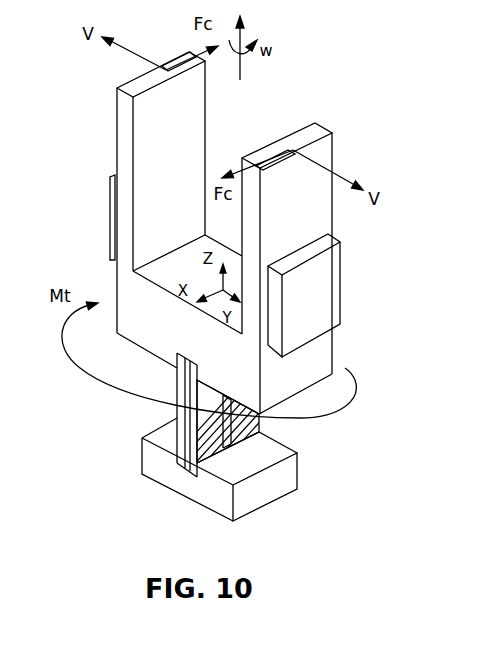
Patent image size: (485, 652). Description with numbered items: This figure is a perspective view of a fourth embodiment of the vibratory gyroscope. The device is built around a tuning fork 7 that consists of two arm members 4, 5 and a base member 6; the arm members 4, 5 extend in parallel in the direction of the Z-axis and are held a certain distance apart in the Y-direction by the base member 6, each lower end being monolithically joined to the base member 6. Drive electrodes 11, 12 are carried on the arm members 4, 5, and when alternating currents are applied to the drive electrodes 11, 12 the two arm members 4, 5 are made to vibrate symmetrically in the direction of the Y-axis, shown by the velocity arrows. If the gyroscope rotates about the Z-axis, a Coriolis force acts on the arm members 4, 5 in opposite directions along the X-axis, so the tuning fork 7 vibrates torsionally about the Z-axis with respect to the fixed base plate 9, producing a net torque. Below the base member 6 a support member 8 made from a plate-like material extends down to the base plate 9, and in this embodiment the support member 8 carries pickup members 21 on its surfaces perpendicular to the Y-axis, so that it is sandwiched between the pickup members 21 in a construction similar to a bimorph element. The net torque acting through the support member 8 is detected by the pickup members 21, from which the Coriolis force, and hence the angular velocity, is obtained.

The arm member 4 is at (303, 215).
The arm member 5 is at (125, 135).
The base member 6 is at (133, 307).
The tuning fork 7 is at (208, 98).
The support member 8 is at (186, 472).
The base plate 9 is at (280, 477).
The drive electrode 11 is at (343, 267).
The drive electrode 12 is at (108, 235).
The pickup member 21 is at (192, 442).